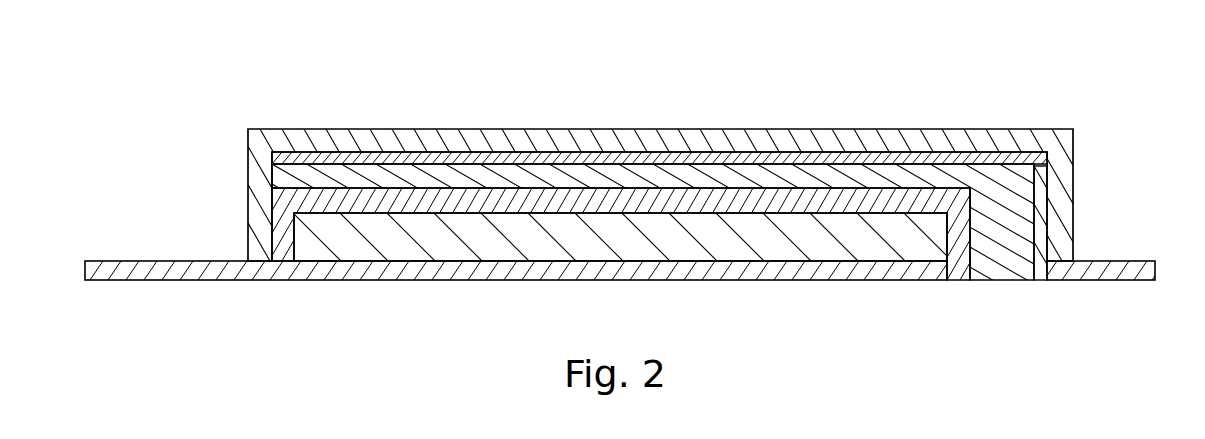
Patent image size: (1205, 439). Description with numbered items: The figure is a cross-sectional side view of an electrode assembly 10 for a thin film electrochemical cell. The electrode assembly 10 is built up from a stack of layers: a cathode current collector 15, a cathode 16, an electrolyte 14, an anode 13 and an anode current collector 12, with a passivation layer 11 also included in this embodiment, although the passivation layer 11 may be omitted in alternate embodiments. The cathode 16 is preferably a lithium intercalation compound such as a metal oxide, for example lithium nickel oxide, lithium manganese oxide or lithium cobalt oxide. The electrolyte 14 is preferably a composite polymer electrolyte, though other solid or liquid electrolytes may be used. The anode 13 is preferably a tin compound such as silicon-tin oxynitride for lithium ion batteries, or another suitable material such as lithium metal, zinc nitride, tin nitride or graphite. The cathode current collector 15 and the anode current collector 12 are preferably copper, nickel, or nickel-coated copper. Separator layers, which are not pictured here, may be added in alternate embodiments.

The electrode assembly 10 is at (230, 74).
The passivation layer 11 is at (370, 146).
The anode current collector 12 is at (1108, 272).
The anode 13 is at (1005, 270).
The electrolyte 14 is at (962, 268).
The cathode current collector 15 is at (160, 265).
The cathode 16 is at (495, 245).